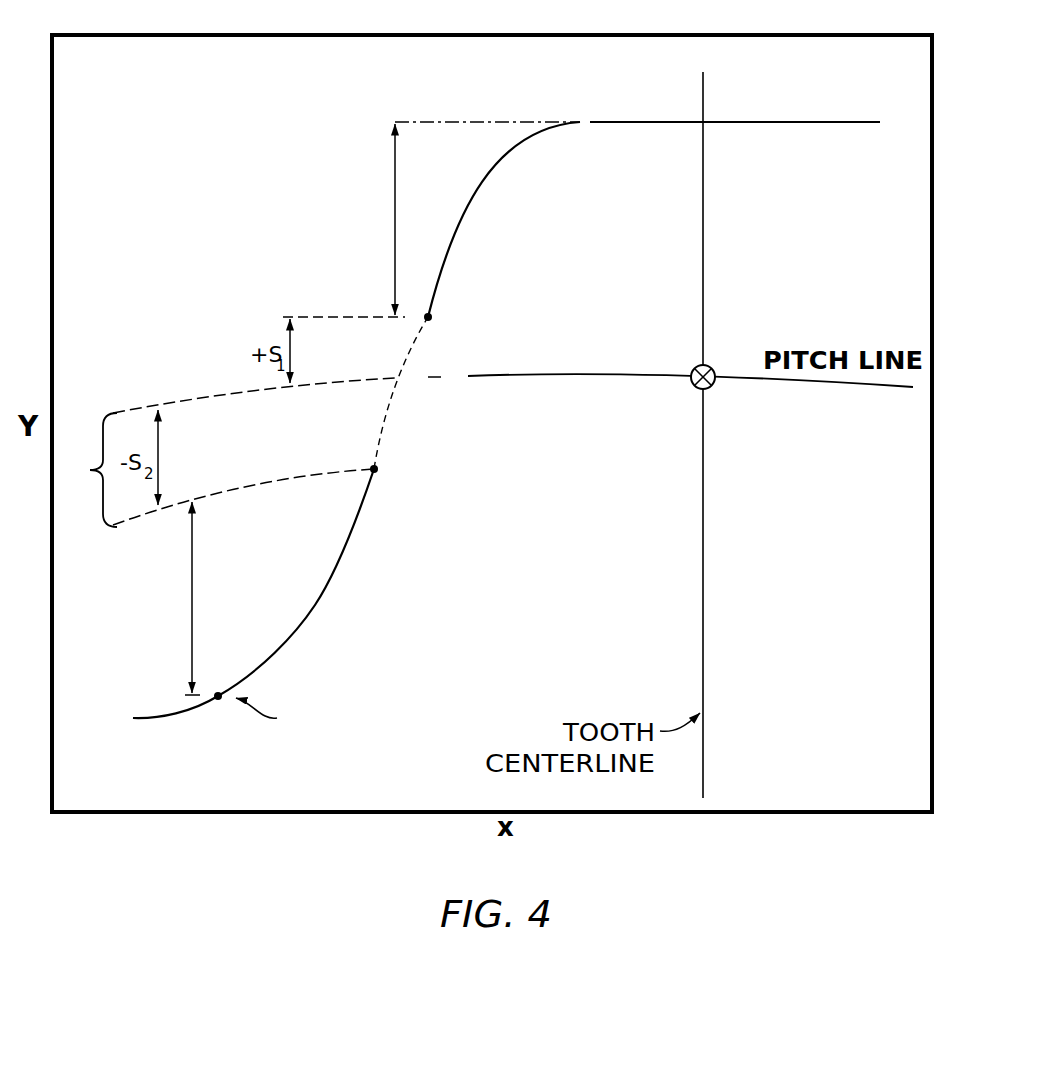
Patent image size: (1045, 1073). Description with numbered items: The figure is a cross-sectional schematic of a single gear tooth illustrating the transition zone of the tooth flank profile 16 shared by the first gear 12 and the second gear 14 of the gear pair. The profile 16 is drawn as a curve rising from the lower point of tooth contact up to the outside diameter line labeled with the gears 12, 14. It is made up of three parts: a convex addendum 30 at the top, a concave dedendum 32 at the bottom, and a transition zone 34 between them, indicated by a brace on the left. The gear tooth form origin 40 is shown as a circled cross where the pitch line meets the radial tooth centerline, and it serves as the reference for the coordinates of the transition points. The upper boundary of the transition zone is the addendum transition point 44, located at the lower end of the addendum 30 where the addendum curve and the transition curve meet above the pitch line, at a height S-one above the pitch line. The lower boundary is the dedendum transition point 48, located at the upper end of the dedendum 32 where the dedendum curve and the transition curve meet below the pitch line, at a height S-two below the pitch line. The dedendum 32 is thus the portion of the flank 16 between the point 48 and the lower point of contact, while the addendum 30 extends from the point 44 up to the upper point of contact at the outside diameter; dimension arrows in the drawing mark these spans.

The first gear 12 is at (637, 91).
The second gear 14 is at (637, 91).
The tooth flank profile 16 is at (414, 794).
The convex addendum 30 is at (395, 204).
The concave dedendum 32 is at (192, 588).
The transition zone 34 is at (90, 470).
The gear tooth form origin 40 is at (717, 357).
The addendum transition point 44 is at (441, 319).
The dedendum transition point 48 is at (387, 469).